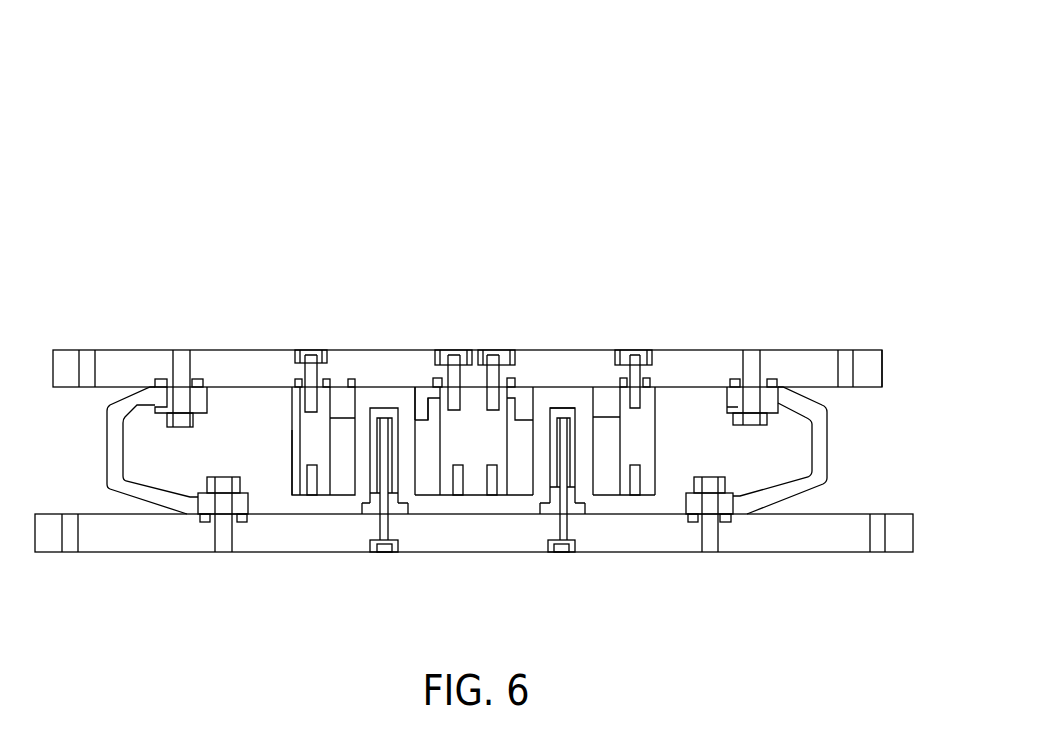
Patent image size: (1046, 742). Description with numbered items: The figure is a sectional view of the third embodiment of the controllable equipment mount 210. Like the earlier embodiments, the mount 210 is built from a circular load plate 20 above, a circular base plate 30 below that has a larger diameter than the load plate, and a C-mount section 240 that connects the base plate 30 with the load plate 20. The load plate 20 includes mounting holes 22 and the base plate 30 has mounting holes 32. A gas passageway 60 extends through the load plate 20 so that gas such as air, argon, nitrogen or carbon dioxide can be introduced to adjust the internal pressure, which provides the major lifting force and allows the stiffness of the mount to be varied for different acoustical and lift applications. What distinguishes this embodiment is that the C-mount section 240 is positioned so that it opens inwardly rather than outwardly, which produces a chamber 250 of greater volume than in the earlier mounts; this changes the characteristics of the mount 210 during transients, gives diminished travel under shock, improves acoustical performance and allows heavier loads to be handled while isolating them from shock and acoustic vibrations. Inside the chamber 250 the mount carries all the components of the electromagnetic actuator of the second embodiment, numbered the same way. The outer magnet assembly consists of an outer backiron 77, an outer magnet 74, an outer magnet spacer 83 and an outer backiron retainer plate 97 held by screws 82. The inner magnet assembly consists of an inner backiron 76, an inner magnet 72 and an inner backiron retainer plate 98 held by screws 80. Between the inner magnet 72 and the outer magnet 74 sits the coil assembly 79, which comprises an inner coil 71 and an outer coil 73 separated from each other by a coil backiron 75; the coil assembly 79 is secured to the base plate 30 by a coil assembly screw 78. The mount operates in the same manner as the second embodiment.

The controllable mount 210 is at (667, 68).
The load plate 20 is at (353, 363).
The mounting holes 22 is at (845, 358).
The mounting holes 32 is at (68, 545).
The base plate 30 is at (457, 482).
The gas passageway 60 is at (277, 363).
The chamber 250 is at (275, 495).
The C-mount section 240 is at (112, 473).
The screws 82 is at (643, 372).
The outer magnet spacer 83 is at (607, 397).
The outer magnet 74 is at (335, 477).
The outer backiron 77 is at (303, 445).
The inner backiron retainer plate 98 is at (460, 497).
The inner backiron 76 is at (487, 438).
The inner magnet 72 is at (423, 440).
The screws 80 is at (454, 372).
The coil backiron 75 is at (566, 458).
The inner coil 71 is at (550, 453).
The coil assembly screw 78 is at (563, 527).
The outer coil 73 is at (570, 480).
The coil assembly 79 is at (598, 567).
The outer backiron retainer plate 97 is at (590, 490).